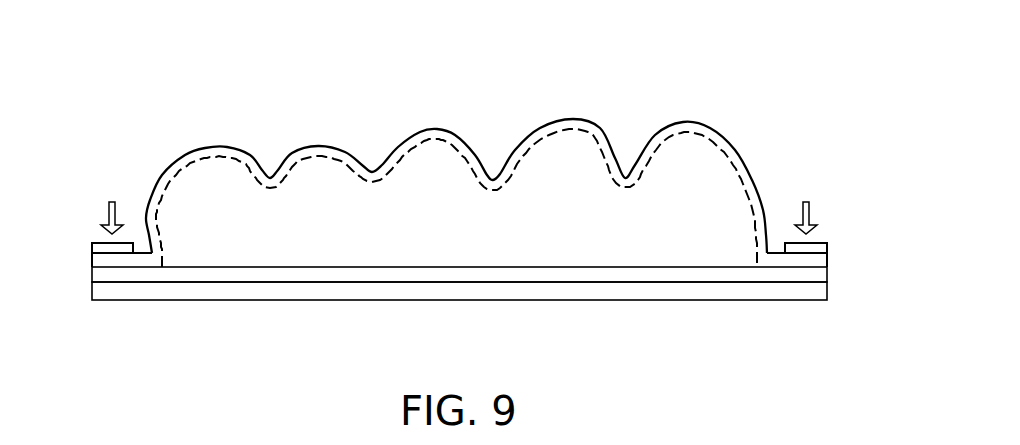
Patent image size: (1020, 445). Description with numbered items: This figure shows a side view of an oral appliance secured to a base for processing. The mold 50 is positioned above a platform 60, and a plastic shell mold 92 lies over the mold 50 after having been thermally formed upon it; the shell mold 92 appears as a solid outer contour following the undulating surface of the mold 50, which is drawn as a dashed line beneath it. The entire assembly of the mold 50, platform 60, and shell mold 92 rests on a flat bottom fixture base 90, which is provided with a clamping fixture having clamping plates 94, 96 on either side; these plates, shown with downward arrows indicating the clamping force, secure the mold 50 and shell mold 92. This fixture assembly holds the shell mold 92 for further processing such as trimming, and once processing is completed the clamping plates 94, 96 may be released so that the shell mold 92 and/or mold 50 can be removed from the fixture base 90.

The mold 50 is at (207, 158).
The shell mold 92 is at (568, 118).
The clamping plate 94 is at (97, 241).
The clamping plate 96 is at (820, 242).
The fixture base 90 is at (170, 300).
The platform 60 is at (262, 268).